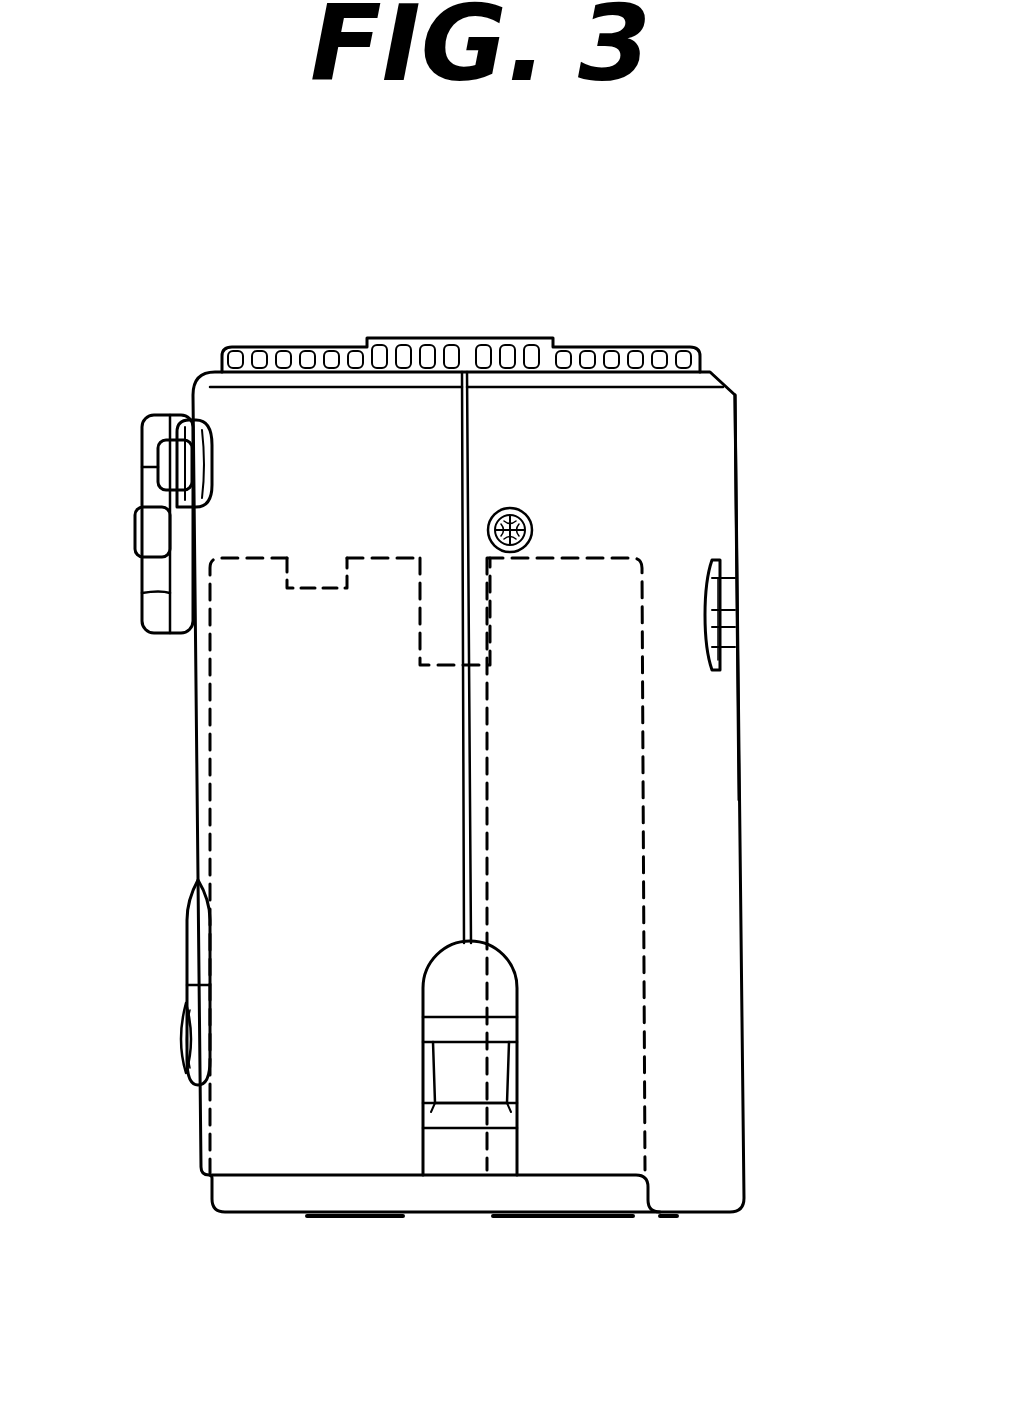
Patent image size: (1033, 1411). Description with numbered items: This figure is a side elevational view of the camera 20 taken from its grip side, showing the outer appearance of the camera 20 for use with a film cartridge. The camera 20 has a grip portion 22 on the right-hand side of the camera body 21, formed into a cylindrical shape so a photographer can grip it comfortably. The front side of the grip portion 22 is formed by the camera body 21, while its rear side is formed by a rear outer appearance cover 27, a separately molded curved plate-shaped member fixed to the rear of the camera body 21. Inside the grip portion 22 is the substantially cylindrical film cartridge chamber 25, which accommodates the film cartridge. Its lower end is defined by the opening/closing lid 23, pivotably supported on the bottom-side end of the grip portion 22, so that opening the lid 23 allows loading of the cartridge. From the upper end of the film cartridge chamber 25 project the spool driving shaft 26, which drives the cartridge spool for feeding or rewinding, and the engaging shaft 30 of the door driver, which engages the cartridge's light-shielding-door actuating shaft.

The camera 20 is at (572, 296).
The camera body 21 is at (697, 542).
The grip portion 22 is at (752, 460).
The opening/closing lid 23 is at (280, 1195).
The film cartridge chamber 25 is at (613, 903).
The spool driving shaft 26 is at (443, 573).
The rear outer appearance cover 27 is at (232, 768).
The engaging shaft 30 is at (315, 575).